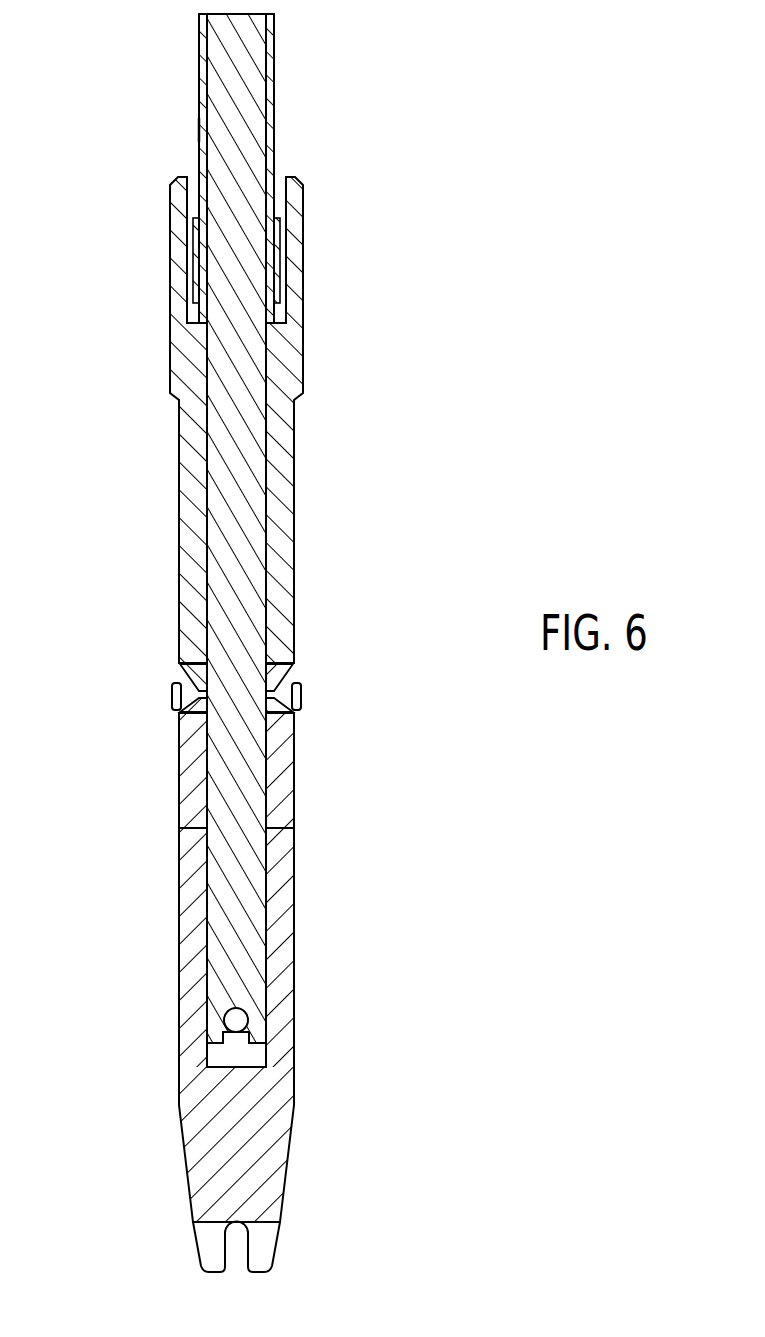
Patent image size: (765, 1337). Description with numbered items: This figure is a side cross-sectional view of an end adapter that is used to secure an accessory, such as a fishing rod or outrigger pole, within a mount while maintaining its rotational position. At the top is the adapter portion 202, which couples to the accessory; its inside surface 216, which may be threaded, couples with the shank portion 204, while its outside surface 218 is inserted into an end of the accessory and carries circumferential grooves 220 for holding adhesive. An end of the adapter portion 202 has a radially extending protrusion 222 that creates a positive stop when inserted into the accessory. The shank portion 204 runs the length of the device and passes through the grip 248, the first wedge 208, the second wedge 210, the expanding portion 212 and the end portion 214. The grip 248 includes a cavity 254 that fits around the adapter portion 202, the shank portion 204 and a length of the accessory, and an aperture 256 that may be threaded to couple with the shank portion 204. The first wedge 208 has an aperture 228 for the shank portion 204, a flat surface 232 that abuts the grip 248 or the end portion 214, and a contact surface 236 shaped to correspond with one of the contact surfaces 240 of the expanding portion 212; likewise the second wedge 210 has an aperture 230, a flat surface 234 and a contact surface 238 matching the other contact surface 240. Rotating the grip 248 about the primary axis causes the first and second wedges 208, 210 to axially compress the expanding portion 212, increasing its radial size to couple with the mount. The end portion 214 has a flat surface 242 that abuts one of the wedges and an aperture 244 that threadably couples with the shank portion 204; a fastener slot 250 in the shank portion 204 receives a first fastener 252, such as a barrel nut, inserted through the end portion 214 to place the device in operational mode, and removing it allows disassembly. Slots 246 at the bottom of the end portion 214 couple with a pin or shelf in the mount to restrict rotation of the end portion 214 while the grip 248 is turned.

The adapter portion 202 is at (236, 166).
The shank portion 204 is at (247, 143).
The first wedge 208 is at (128, 635).
The second wedge 210 is at (210, 967).
The expanding portion 212 is at (172, 704).
The end portion 214 is at (235, 725).
The inside surface 216 is at (206, 56).
The outside surface 218 is at (274, 88).
The circumferential grooves 220 is at (199, 130).
The radially extending protrusion 222 is at (187, 263).
The aperture 228 is at (283, 682).
The aperture 230 is at (207, 782).
The flat surface 232 is at (184, 660).
The flat surface 234 is at (280, 827).
The contact surface 236 is at (346, 660).
The contact surface 238 is at (294, 712).
The contact surfaces 240 is at (173, 695).
The flat surface 242 is at (282, 838).
The aperture 244 is at (210, 967).
The slots 246 is at (248, 1245).
The grip 248 is at (239, 417).
The fastener slot 250 is at (223, 1040).
The first fastener 252 is at (238, 1021).
The cavity 254 is at (186, 198).
The aperture 256 is at (207, 556).